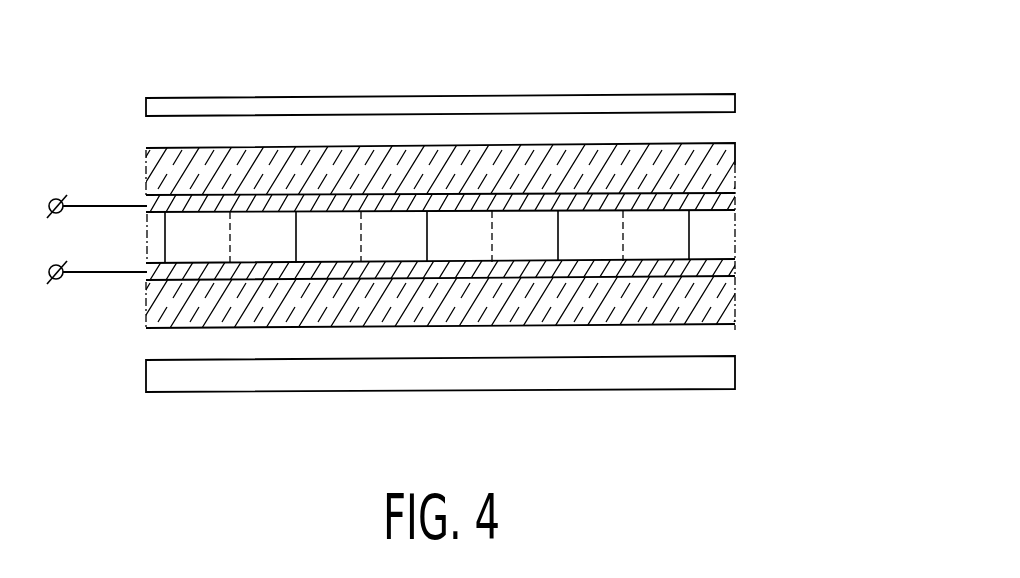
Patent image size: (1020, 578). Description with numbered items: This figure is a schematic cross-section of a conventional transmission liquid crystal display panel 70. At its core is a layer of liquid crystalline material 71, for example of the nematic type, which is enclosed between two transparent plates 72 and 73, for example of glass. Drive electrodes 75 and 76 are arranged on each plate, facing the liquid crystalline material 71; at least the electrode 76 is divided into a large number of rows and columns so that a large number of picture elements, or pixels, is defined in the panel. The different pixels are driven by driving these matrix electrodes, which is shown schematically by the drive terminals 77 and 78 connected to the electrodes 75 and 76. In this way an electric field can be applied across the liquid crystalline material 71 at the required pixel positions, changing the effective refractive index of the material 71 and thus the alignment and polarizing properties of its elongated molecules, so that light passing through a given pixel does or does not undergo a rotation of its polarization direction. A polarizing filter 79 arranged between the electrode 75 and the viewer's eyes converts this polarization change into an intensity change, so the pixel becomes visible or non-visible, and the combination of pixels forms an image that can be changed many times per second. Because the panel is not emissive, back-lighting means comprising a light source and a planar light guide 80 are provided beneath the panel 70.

The transmission liquid crystal display panel 70 is at (695, 52).
The layer of liquid crystalline material 71 is at (728, 232).
The transparent plate 72 is at (726, 162).
The transparent plate 73 is at (727, 310).
The drive electrode 75 is at (720, 202).
The drive electrode 76 is at (728, 271).
The drive terminal 77 is at (57, 199).
The drive terminal 78 is at (57, 279).
The polarizing filter 79 is at (735, 103).
The planar light guide 80 is at (728, 370).